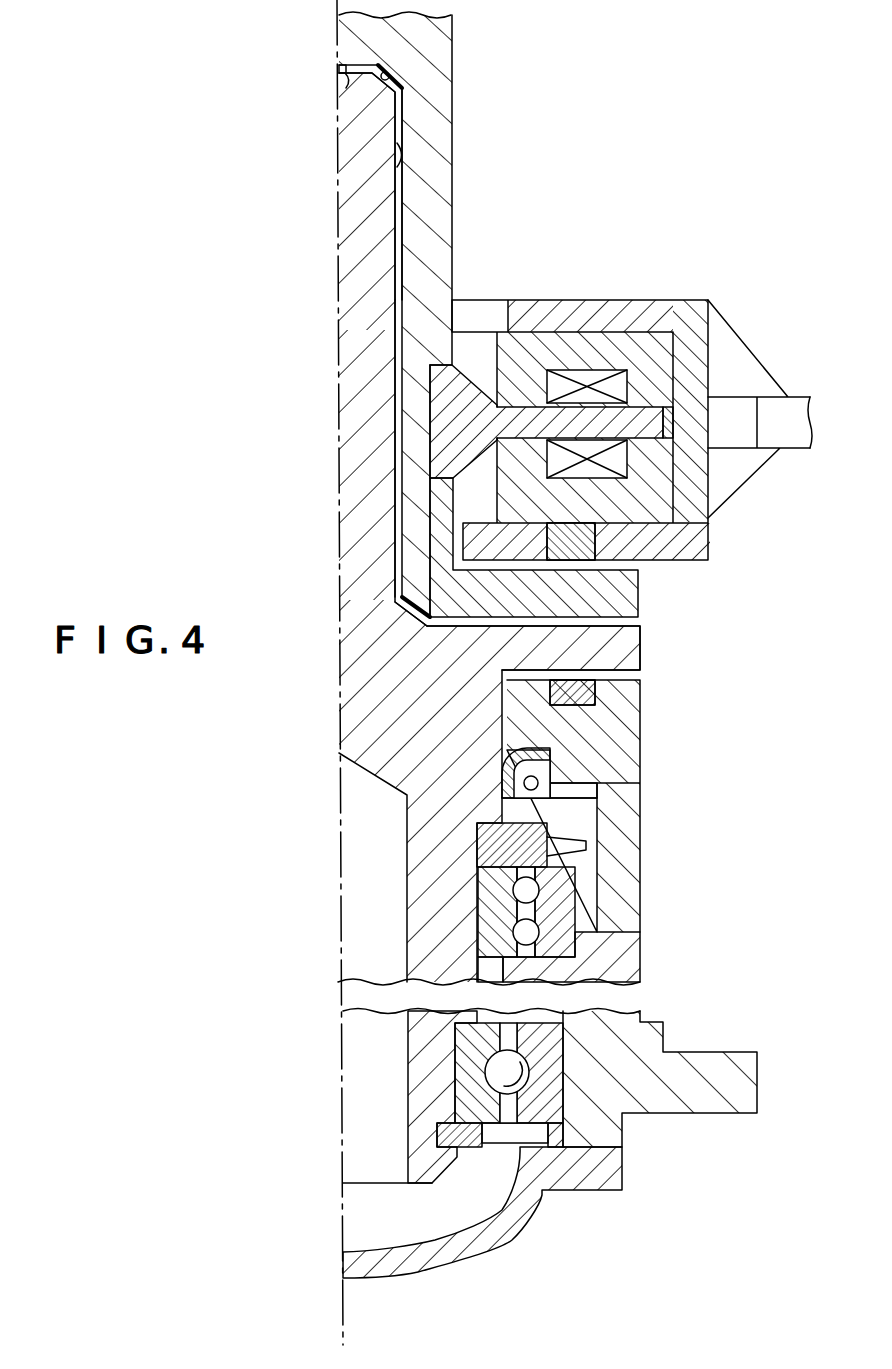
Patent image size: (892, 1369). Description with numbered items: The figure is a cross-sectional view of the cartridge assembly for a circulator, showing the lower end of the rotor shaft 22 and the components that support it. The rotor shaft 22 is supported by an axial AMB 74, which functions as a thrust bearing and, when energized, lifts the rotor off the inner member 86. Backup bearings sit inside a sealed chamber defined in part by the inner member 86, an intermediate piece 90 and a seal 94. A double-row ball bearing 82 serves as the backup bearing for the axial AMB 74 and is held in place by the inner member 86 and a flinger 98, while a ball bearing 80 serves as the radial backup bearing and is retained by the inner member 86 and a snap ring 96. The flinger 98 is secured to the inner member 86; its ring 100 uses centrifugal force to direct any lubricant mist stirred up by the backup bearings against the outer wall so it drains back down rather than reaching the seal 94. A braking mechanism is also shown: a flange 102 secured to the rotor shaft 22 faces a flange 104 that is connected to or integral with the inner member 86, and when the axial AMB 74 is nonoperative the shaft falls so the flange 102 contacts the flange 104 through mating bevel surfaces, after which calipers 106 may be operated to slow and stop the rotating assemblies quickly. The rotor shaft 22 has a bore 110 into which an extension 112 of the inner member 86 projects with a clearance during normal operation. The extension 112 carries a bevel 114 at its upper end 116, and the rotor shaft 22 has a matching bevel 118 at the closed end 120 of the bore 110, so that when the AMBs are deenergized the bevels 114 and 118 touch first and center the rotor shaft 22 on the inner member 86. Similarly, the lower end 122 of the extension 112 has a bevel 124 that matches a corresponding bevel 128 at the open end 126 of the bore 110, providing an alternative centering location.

The rotor shaft 22 is at (433, 88).
The axial AMB 74 is at (648, 350).
The ball bearing 80 is at (547, 1125).
The double-row ball bearing 82 is at (577, 890).
The inner member 86 is at (355, 727).
The intermediate piece 90 is at (612, 725).
The seal 94 is at (553, 750).
The snap ring 96 is at (477, 1147).
The flinger 98 is at (547, 822).
The ring 100 is at (585, 847).
The flange 102 is at (642, 592).
The flange 104 is at (640, 648).
The calipers 106 is at (585, 541).
The bore 110 is at (345, 75).
The extension 112 is at (352, 133).
The bevel 114 is at (433, 97).
The upper end 116 is at (340, 107).
The bevel 118 is at (388, 74).
The closed end 120 is at (355, 63).
The lower end 122 is at (355, 578).
The bevel 124 is at (398, 592).
The open end 126 is at (415, 455).
The bevel 128 is at (410, 607).